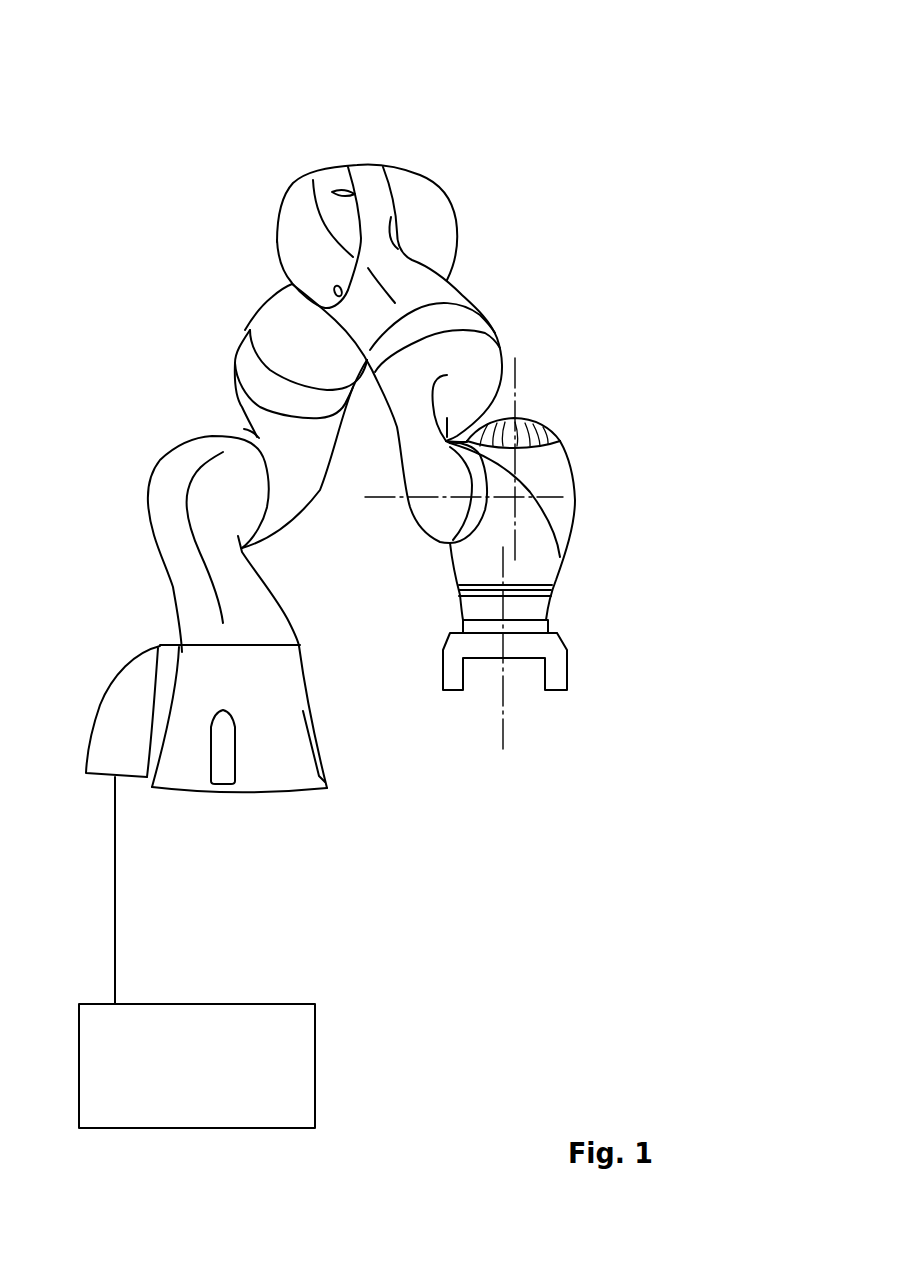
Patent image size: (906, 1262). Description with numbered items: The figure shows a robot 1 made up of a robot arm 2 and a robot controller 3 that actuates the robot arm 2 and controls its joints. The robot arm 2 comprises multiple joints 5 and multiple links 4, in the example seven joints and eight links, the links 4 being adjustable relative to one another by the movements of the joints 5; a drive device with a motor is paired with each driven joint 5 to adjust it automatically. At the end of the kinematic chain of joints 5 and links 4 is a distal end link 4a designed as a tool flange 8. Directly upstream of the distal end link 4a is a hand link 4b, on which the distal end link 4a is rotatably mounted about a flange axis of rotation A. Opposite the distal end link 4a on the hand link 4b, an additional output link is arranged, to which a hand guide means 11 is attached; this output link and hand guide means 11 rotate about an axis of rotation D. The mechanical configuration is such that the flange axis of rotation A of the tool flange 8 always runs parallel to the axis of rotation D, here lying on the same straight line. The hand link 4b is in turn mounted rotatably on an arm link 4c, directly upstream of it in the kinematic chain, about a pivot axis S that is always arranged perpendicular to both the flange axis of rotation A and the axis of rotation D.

The robot 1 is at (538, 897).
The robot arm 2 is at (207, 260).
The robot controller 3 is at (287, 1072).
The links 4 is at (292, 322).
The distal end link 4a is at (591, 654).
The hand link 4b is at (522, 545).
The arm link 4c is at (478, 372).
The joints 5 is at (375, 165).
The tool flange 8 is at (533, 630).
The hand guide means 11 is at (546, 425).
The axis of rotation D is at (520, 393).
The pivot axis S is at (373, 500).
The flange axis of rotation A is at (503, 732).